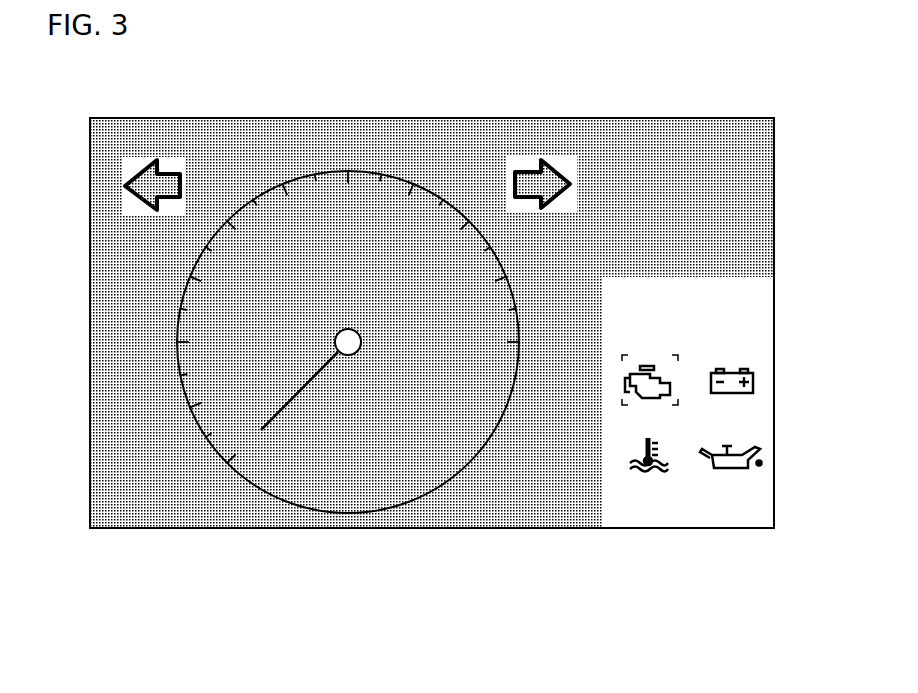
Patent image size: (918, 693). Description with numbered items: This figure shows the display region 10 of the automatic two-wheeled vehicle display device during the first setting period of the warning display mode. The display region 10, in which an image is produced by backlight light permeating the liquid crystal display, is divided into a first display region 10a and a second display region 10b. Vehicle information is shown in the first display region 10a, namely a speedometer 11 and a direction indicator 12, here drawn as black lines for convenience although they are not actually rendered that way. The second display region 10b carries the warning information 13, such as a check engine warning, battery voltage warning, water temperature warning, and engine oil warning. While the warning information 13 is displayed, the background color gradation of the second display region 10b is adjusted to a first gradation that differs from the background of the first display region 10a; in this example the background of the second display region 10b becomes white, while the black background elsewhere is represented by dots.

The display region 10 is at (89, 298).
The first display region 10a is at (262, 150).
The second display region 10b is at (757, 308).
The speedometer 11 is at (258, 486).
The direction indicator 12 is at (138, 150).
The warning information 13 is at (655, 474).